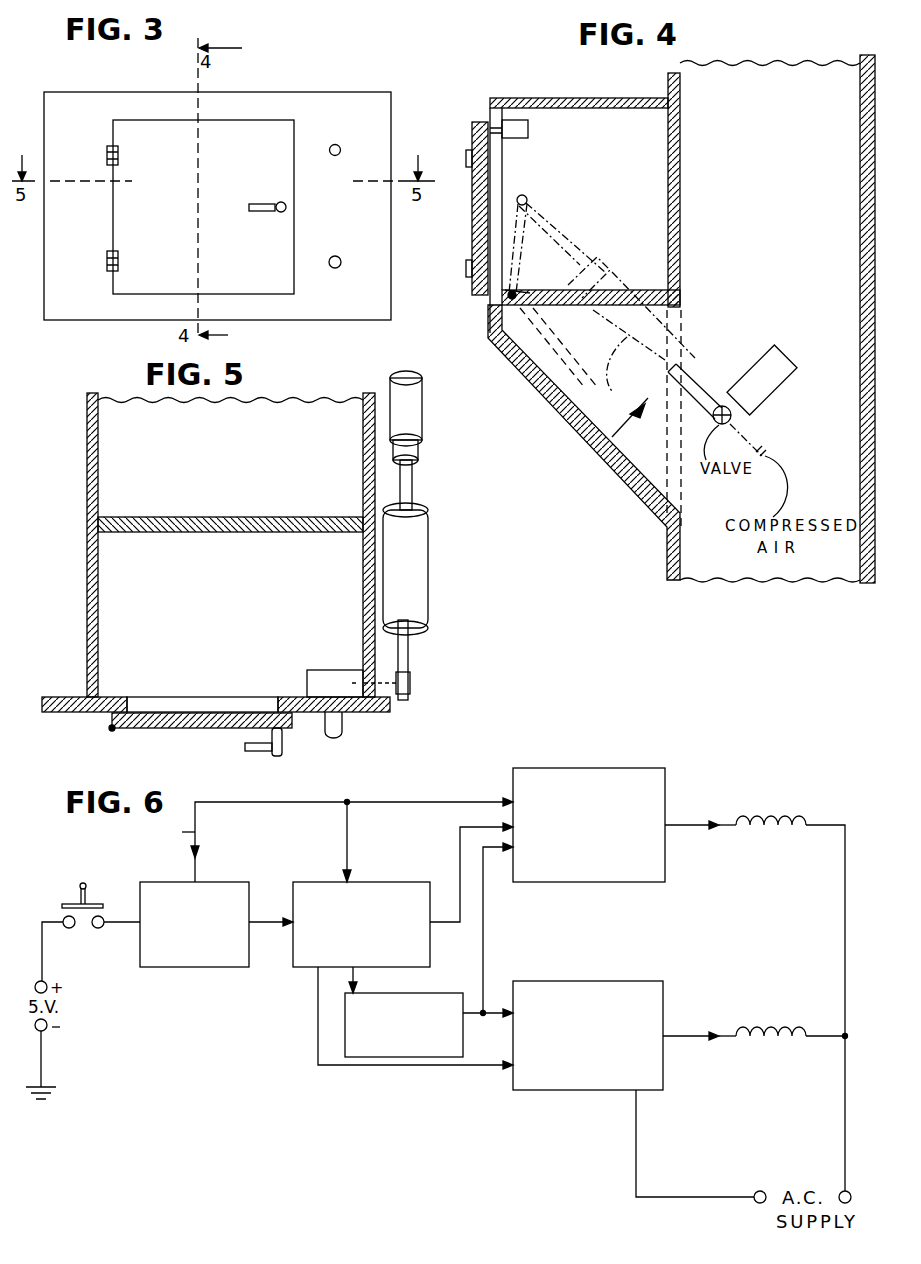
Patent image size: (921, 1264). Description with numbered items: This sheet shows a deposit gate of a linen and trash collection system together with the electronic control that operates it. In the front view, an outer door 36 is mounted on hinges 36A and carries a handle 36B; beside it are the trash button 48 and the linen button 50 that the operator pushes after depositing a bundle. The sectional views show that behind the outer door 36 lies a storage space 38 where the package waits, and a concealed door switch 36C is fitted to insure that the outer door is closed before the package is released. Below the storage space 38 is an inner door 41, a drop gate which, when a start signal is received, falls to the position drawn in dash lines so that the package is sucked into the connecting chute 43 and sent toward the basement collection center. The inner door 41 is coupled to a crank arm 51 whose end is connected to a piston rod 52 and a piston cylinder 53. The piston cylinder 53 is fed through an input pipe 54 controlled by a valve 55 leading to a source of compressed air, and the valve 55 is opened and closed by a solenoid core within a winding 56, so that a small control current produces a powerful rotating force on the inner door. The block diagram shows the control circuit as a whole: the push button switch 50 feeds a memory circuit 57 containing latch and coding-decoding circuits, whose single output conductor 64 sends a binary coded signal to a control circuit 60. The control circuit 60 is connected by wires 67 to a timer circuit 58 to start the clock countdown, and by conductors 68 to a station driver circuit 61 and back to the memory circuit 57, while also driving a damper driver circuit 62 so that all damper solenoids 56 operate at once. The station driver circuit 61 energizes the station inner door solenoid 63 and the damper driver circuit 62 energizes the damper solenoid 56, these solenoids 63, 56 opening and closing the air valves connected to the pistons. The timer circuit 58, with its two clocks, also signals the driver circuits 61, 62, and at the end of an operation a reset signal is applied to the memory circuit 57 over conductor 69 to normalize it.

In FIG. 3, the outer door 36 is at (263, 132).
In FIG. 4, the outer door 36 is at (472, 140).
In FIG. 5, the outer door 36 is at (150, 720).
In FIG. 3, the hinges 36A is at (107, 156).
In FIG. 4, the hinges 36A is at (466, 268).
In FIG. 5, the hinges 36A is at (112, 730).
In FIG. 3, the handle 36B is at (268, 211).
In FIG. 5, the handle 36B is at (248, 748).
In FIG. 4, the concealed door switch 36C is at (515, 125).
In FIG. 4, the storage space 38 is at (593, 130).
In FIG. 4, the inner door 41 is at (652, 290).
In FIG. 5, the inner door 41 is at (236, 588).
In FIG. 4, the connecting chute 43 is at (778, 248).
In FIG. 5, the connecting chute 43 is at (253, 470).
In FIG. 3, the trash button 48 is at (341, 150).
In FIG. 3, the linen button 50 is at (339, 267).
In FIG. 5, the linen button 50 is at (342, 738).
In FIG. 6, the linen button 50 is at (80, 880).
In FIG. 4, the crank arm 51 is at (538, 263).
In FIG. 5, the crank arm 51 is at (410, 684).
In FIG. 4, the piston rod 52 is at (578, 240).
In FIG. 5, the piston rod 52 is at (408, 660).
In FIG. 4, the piston cylinder 53 is at (625, 387).
In FIG. 5, the piston cylinder 53 is at (428, 578).
In FIG. 4, the input pipe 54 is at (700, 384).
In FIG. 5, the input pipe 54 is at (412, 478).
In FIG. 4, the valve 55 is at (713, 421).
In FIG. 5, the valve 55 is at (418, 448).
In FIG. 4, the winding 56 is at (776, 386).
In FIG. 5, the winding 56 is at (417, 398).
In FIG. 6, the winding 56 is at (758, 1020).
In FIG. 6, the memory circuit 57 is at (158, 890).
In FIG. 6, the timer circuit 58 is at (440, 998).
In FIG. 6, the control circuit 60 is at (385, 888).
In FIG. 6, the station driver circuit 61 is at (622, 775).
In FIG. 6, the damper driver circuit 62 is at (612, 990).
In FIG. 6, the operating solenoid 63 is at (760, 835).
In FIG. 6, the conductor 64 is at (270, 912).
In FIG. 6, the wires 67 is at (356, 978).
In FIG. 6, the conductors 68 is at (460, 838).
In FIG. 6, the conductor 69 is at (258, 802).